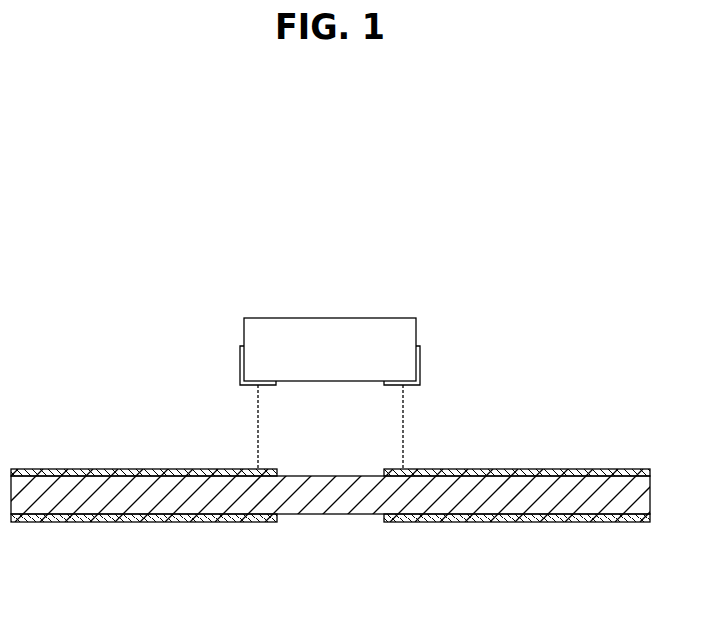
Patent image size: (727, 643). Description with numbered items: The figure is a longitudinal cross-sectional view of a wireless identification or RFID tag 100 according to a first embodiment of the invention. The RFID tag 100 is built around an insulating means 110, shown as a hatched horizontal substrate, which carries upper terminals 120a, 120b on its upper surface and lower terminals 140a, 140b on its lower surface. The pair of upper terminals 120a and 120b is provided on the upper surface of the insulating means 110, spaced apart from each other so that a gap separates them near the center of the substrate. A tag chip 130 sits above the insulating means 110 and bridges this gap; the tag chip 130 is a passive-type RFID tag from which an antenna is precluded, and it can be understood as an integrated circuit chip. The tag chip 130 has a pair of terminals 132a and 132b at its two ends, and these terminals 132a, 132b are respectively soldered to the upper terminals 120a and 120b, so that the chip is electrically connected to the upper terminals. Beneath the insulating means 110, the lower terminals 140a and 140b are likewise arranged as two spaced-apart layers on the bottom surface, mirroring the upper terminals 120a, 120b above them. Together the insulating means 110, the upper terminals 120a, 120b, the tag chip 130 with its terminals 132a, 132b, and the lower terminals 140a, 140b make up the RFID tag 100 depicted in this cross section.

The RFID tag 100 is at (144, 320).
The insulating means 110 is at (623, 500).
The upper terminal 120a is at (97, 470).
The upper terminal 120b is at (510, 470).
The tag chip 130 is at (309, 315).
The terminal 132a is at (241, 357).
The terminal 132b is at (420, 368).
The lower terminal 140a is at (102, 523).
The lower terminal 140b is at (520, 522).